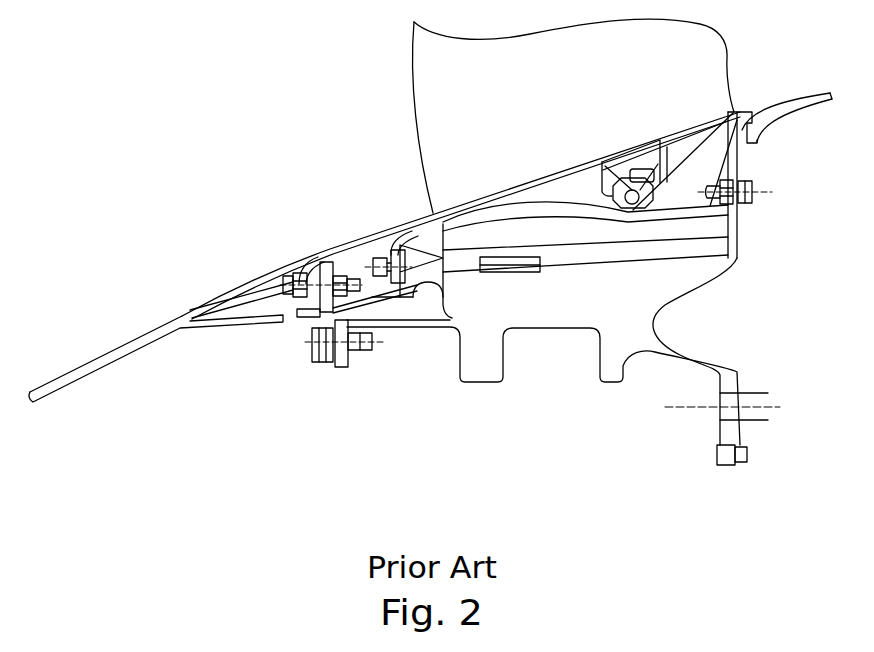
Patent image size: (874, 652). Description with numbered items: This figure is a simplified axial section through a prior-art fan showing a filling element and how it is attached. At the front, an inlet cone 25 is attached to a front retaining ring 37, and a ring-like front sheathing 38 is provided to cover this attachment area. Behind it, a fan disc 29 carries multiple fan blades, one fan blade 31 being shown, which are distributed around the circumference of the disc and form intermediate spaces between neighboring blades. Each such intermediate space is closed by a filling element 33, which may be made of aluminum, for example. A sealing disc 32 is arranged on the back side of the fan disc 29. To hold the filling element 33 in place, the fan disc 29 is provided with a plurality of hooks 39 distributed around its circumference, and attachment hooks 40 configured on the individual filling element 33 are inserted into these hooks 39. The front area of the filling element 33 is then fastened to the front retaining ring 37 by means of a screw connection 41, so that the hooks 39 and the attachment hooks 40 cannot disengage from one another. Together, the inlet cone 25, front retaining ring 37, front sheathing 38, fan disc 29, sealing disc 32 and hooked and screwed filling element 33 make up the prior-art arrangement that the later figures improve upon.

The inlet cone 25 is at (153, 348).
The fan disc 29 is at (540, 332).
The fan blade 31 is at (437, 132).
The sealing disc 32 is at (758, 128).
The filling element 33 is at (481, 193).
The front retaining ring 37 is at (298, 318).
The front sheathing 38 is at (332, 241).
The hooks 39 is at (677, 210).
The attachment hooks 40 is at (606, 168).
The screw connection 41 is at (383, 230).